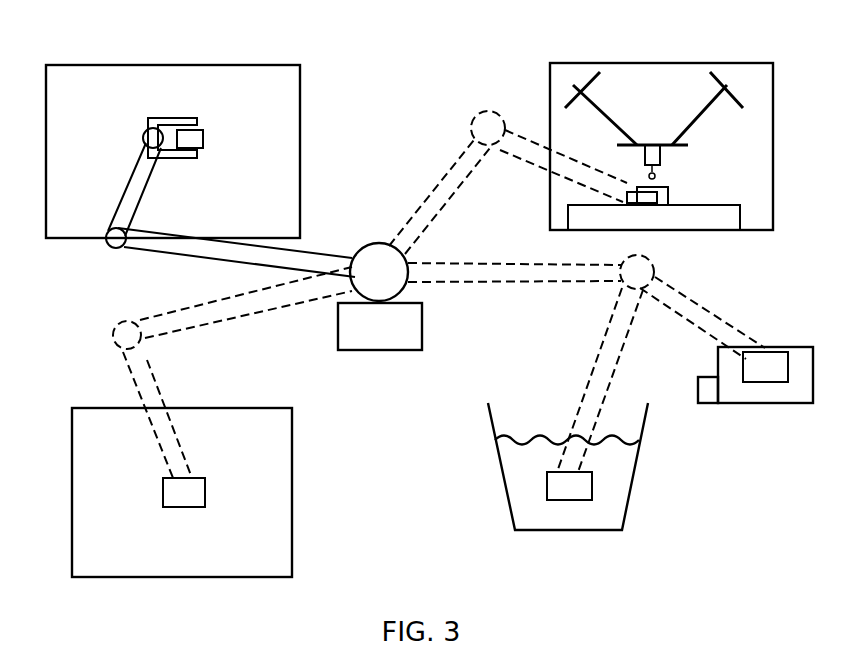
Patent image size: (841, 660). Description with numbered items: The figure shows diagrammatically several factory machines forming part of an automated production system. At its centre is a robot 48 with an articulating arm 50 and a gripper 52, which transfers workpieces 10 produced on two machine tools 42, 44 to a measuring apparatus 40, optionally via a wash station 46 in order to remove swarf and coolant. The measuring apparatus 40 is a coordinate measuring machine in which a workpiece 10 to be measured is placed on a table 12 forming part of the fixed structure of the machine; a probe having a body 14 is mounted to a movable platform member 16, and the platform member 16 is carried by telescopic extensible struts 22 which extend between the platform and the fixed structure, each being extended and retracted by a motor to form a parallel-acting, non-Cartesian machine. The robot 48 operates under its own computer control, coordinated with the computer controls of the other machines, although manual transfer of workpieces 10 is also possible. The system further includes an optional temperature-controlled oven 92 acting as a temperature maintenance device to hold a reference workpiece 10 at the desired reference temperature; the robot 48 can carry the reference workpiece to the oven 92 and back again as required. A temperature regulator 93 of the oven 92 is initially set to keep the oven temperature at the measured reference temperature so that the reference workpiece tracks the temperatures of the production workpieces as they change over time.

The workpiece 10 is at (205, 140).
The table 12 is at (730, 205).
The probe body 14 is at (645, 160).
The movable platform member 16 is at (677, 143).
The telescopic extensible struts 22 is at (700, 118).
The measuring apparatus 40 is at (522, 82).
The machine tool 42 is at (318, 97).
The machine tool 44 is at (306, 464).
The wash station 46 is at (472, 482).
The robot 48 is at (359, 223).
The articulating arm 50 is at (114, 260).
The gripper 52 is at (185, 118).
The temperature-controlled oven 92 is at (798, 393).
The temperature regulator 93 is at (707, 400).